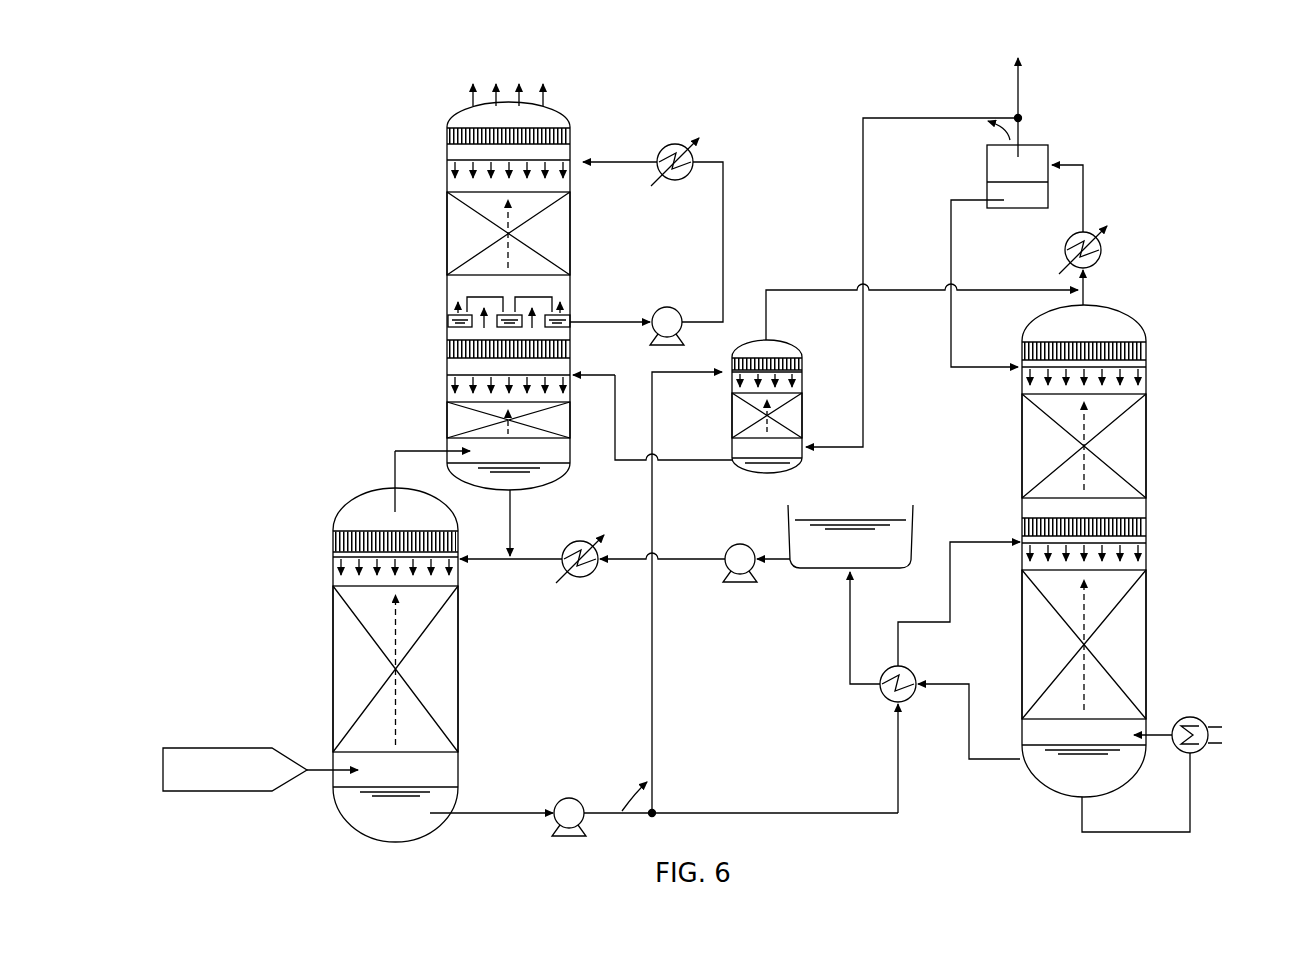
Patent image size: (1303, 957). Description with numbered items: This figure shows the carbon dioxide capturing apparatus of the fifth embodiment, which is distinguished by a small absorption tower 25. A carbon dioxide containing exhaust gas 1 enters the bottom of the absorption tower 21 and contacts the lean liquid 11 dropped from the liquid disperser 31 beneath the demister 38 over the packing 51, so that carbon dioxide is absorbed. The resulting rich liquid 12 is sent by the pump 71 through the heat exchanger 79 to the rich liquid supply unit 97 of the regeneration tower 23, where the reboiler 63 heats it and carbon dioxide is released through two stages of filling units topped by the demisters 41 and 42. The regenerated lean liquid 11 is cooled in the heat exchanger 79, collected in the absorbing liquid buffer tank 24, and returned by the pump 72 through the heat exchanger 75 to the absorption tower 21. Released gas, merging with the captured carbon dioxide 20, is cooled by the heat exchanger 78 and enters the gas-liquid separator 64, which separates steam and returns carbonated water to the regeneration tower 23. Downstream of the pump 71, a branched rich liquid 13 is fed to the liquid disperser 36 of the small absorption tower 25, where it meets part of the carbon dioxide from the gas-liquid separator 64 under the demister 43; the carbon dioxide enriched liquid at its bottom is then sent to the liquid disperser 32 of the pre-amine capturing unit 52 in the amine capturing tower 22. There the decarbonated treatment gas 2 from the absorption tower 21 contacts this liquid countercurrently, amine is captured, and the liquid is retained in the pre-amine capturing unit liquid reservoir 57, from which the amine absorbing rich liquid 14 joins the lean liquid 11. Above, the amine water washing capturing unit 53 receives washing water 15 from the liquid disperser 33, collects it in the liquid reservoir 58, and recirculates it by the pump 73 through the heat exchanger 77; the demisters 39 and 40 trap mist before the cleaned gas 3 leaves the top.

The carbon dioxide containing exhaust gas 1 is at (218, 748).
The decarbonated treatment gas 2 is at (395, 470).
The discharged gas 3 is at (471, 100).
The lean liquid 11 is at (490, 565).
The rich liquid 12 is at (508, 812).
The branched rich liquid 13 is at (652, 666).
The amine absorbing rich liquid 14 is at (510, 508).
The washing water 15 is at (723, 238).
The captured carbon dioxide 20 is at (1015, 78).
The absorption tower 21 is at (325, 597).
The amine capturing tower 22 is at (430, 188).
The regeneration tower 23 is at (1157, 426).
The absorbing liquid buffer tank 24 is at (806, 570).
The small absorption tower 25 is at (725, 388).
The liquid disperser 31 is at (338, 560).
The liquid disperser 32 is at (452, 377).
The liquid disperser 33 is at (452, 163).
The liquid disperser 36 is at (804, 376).
The demister 38 is at (338, 541).
The demister 39 is at (452, 349).
The demister 40 is at (452, 135).
The demister 41 is at (1022, 527).
The demister 42 is at (1142, 351).
The demister 43 is at (806, 362).
The packing 51 is at (333, 666).
The pre-amine capturing unit 52 is at (462, 414).
The amine water washing capturing unit 53 is at (447, 240).
The pre-amine capturing unit liquid reservoir 57 is at (560, 478).
The liquid reservoir 58 is at (452, 320).
The reboiler 63 is at (1203, 750).
The gas-liquid separator 64 is at (975, 166).
The pump 71 is at (572, 798).
The pump 72 is at (738, 576).
The pump 73 is at (672, 307).
The heat exchanger 75 is at (598, 574).
The heat exchanger 77 is at (660, 150).
The heat exchanger 78 is at (1103, 260).
The heat exchanger 79 is at (910, 698).
The rich liquid supply unit 97 is at (1148, 552).